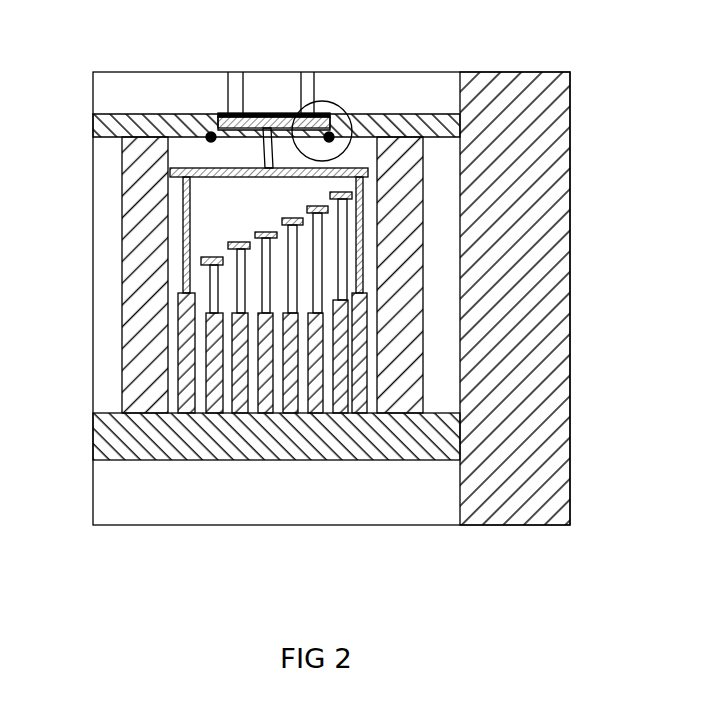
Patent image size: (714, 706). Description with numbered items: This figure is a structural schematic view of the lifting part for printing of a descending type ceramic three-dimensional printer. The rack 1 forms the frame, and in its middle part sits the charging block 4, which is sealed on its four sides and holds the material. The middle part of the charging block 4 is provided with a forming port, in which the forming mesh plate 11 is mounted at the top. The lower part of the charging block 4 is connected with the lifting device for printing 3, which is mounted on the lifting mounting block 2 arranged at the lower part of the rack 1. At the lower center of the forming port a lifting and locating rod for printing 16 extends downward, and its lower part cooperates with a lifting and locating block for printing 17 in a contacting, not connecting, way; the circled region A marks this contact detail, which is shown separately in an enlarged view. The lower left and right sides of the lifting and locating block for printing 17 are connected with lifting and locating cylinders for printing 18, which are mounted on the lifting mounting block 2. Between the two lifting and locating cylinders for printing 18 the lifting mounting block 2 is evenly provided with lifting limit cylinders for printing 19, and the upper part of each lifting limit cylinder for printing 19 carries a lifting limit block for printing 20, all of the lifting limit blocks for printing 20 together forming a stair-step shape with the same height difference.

The rack 1 is at (540, 432).
The lifting mounting block 2 is at (325, 438).
The lifting device for printing 3 is at (405, 360).
The charging block 4 is at (430, 113).
The forming mesh plate 11 is at (230, 113).
The lifting and locating rod for printing 16 is at (277, 113).
The lifting and locating block for printing 17 is at (210, 136).
The lifting and locating cylinder for printing 18 is at (183, 297).
The lifting limit cylinder for printing 19 is at (265, 375).
The lifting limit block for printing 20 is at (210, 253).
The partially enlarged region A is at (330, 103).